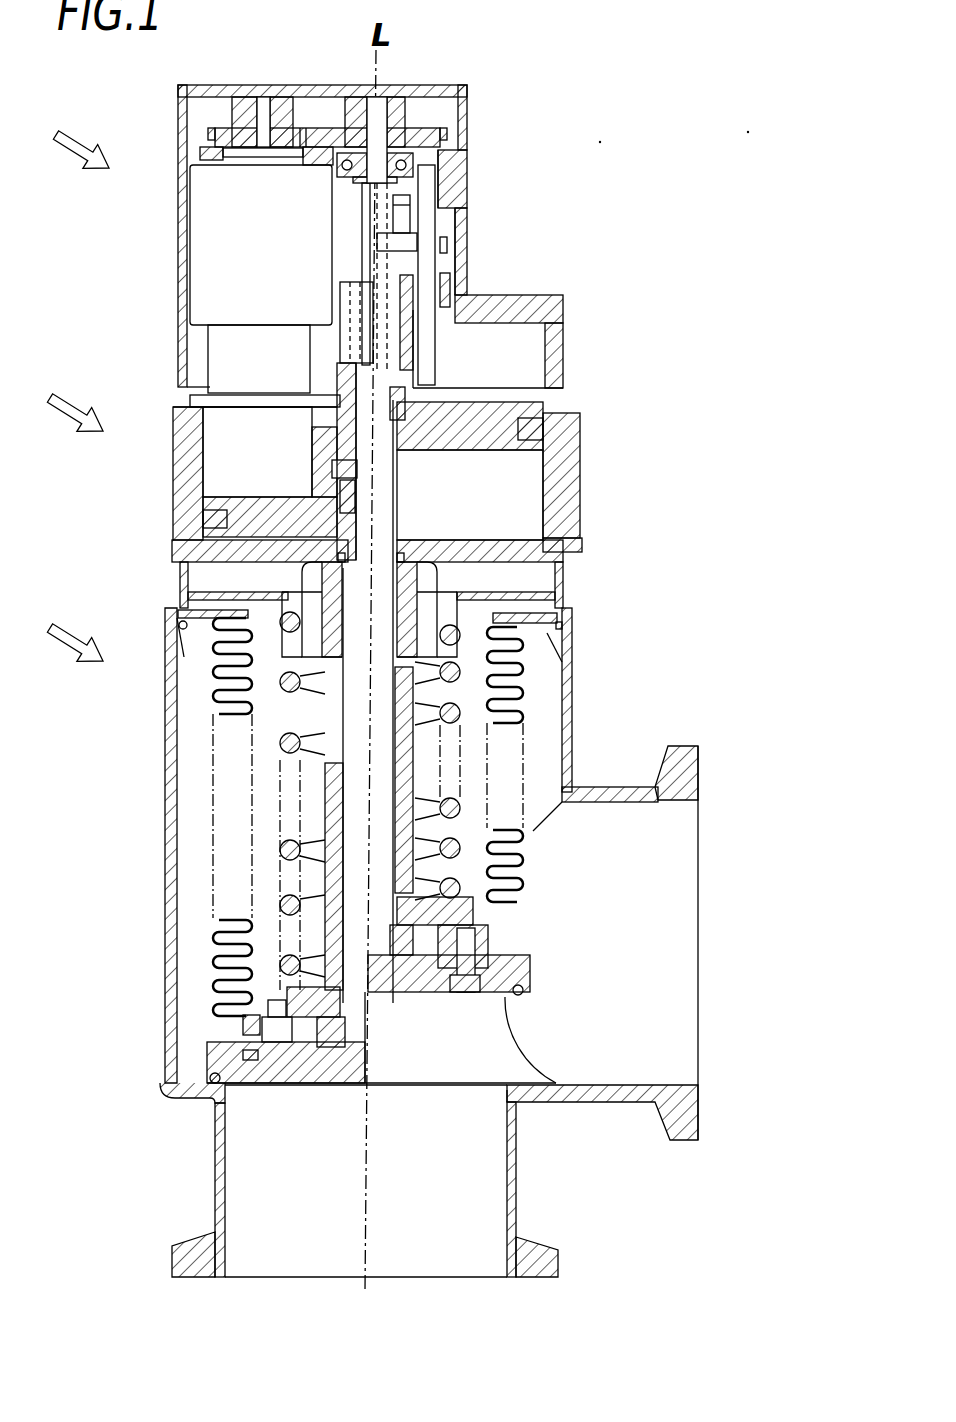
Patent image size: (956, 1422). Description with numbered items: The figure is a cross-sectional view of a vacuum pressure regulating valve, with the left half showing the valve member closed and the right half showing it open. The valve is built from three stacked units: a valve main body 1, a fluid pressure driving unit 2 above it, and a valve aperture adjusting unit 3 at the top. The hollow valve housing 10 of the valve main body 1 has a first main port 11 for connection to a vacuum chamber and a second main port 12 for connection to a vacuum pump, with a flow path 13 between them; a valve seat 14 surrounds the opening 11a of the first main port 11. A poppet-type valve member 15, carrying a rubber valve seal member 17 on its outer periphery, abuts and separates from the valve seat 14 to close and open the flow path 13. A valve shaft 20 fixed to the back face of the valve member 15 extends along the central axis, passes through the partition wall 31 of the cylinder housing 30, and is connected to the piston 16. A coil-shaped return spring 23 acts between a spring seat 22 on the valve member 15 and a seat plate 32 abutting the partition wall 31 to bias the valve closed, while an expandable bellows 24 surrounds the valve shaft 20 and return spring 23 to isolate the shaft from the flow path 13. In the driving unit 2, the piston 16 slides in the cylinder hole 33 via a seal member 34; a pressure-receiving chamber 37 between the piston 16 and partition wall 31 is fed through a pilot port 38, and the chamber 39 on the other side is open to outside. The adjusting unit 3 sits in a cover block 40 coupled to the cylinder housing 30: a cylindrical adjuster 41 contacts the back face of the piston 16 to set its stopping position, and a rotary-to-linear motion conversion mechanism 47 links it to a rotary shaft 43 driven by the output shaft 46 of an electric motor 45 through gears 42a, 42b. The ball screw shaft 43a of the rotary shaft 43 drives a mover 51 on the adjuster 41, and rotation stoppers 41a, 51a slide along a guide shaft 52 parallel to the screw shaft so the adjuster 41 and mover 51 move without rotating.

The valve main body 1 is at (72, 630).
The fluid pressure driving unit 2 is at (70, 400).
The valve aperture adjusting unit 3 is at (74, 139).
The valve housing 10 is at (168, 800).
The first main port 11 is at (395, 1263).
The opening of the first main port 11a is at (505, 1096).
The second main port 12 is at (688, 893).
The flow path 13 is at (440, 1052).
The valve seat 14 is at (527, 1078).
The valve member 15 is at (523, 967).
The piston 16 is at (215, 522).
The valve seal member 17 is at (522, 996).
The valve shaft 20 is at (350, 713).
The spring seat 22 is at (273, 988).
The return spring 23 is at (280, 850).
The bellows 24 is at (237, 975).
The cylinder housing 30 is at (177, 467).
The partition wall 31 is at (262, 562).
The seat plate 32 is at (300, 603).
The cylinder hole 33 is at (213, 428).
The seal member 34 is at (582, 430).
The pressure-receiving chamber 37 is at (488, 509).
The pilot port 38 is at (582, 545).
The chamber 39 is at (273, 454).
The cover block 40 is at (550, 308).
The adjuster 41 is at (322, 470).
The rotation stopper 41a is at (450, 285).
The gear 42a is at (290, 110).
The gear 42b is at (422, 122).
The rotary shaft 43 is at (378, 110).
The ball screw shaft 43a is at (420, 203).
The electric motor 45 is at (200, 208).
The output shaft 46 is at (263, 108).
The rotary-to-linear motion conversion mechanism 47 is at (468, 228).
The mover 51 is at (352, 302).
The rotation stopper 51a is at (447, 243).
The guide shaft 52 is at (430, 263).